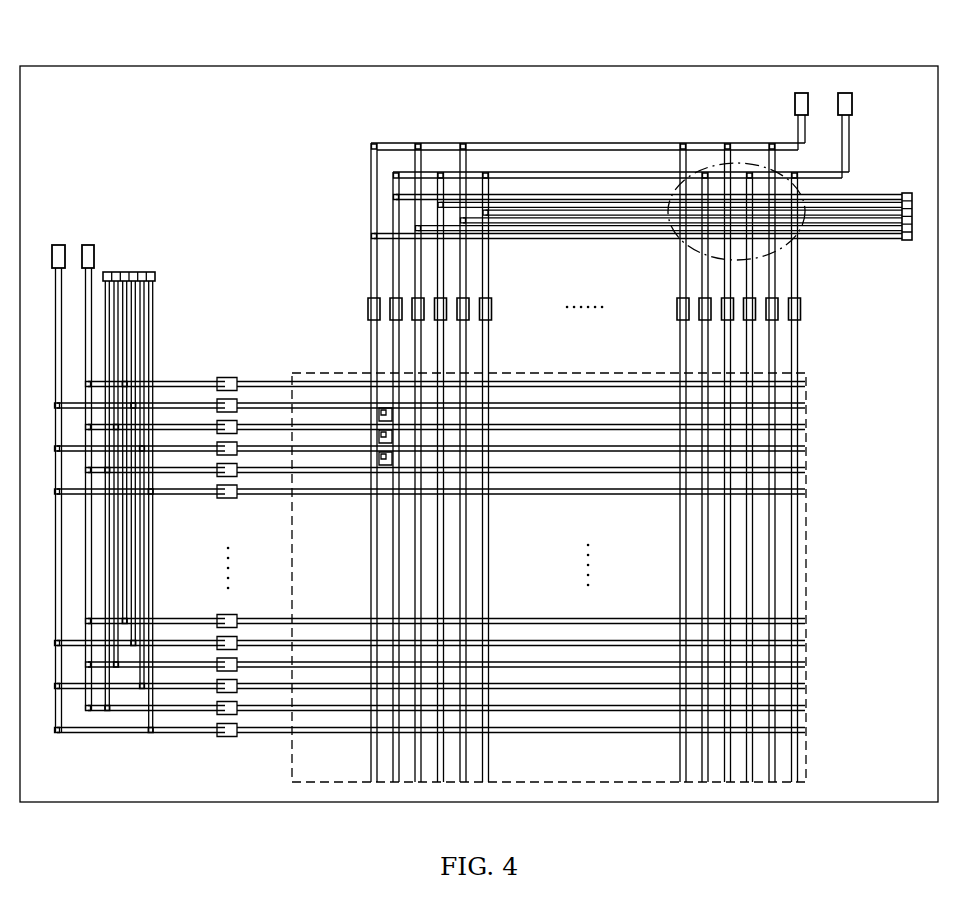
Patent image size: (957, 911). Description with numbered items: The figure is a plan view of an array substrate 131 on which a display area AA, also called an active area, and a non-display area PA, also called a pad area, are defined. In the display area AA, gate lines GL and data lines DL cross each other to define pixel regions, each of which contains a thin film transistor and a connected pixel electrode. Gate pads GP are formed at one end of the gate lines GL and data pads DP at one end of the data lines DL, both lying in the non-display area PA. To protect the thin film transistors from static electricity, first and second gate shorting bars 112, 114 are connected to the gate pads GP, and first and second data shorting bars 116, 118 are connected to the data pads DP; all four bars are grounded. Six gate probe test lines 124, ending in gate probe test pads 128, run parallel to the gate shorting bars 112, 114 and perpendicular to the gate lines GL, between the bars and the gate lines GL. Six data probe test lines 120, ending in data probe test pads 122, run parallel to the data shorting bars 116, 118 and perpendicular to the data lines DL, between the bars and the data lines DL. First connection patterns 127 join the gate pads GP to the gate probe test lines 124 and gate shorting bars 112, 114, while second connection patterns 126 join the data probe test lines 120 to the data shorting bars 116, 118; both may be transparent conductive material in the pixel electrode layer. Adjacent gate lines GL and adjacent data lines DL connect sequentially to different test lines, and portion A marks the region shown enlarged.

The first gate shorting bar 112 is at (58, 245).
The second gate shorting bar 114 is at (88, 245).
The first data shorting bar 116 is at (795, 100).
The second data shorting bar 118 is at (852, 100).
The data probe test lines 120 is at (587, 239).
The data probe test pads 122 is at (906, 193).
The gate probe test lines 124 is at (156, 312).
The second connection patterns 126 is at (680, 270).
The first connection patterns 127 is at (185, 494).
The gate probe test pads 128 is at (156, 274).
The substrate 131 is at (900, 506).
The non-display area PA is at (312, 118).
The display area AA is at (548, 752).
The portion A is at (803, 244).
The gate pads GP is at (229, 377).
The data pads DP is at (797, 312).
The gate lines GL is at (549, 494).
The data lines DL is at (487, 550).